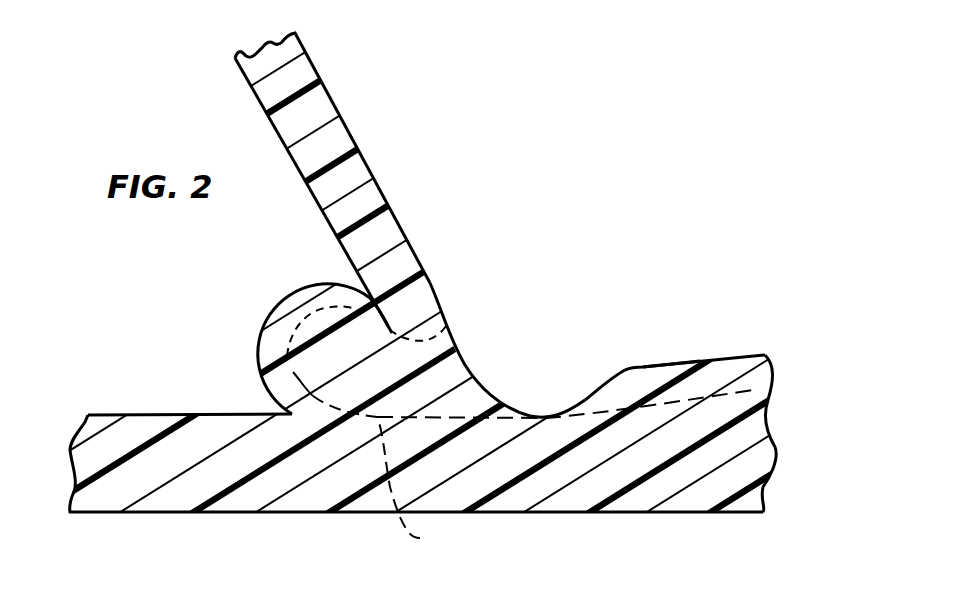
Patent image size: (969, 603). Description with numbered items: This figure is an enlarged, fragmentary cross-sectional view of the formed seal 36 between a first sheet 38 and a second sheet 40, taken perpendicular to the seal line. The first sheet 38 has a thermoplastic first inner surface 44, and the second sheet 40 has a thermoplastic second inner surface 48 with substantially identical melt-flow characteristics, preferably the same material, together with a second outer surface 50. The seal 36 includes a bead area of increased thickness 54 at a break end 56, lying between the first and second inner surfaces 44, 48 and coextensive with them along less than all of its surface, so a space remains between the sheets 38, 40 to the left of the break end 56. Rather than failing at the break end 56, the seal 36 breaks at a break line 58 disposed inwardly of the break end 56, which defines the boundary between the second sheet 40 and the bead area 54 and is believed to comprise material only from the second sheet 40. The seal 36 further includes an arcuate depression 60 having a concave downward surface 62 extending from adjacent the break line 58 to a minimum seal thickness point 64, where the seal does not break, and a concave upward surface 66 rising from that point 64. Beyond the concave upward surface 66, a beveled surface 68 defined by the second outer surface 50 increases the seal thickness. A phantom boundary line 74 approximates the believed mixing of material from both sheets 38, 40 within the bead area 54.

The seal 36 is at (533, 191).
The first sheet 38 is at (130, 483).
The second sheet 40 is at (300, 75).
The first inner surface 44 is at (156, 415).
The second inner surface 48 is at (262, 107).
The second outer surface 50 is at (738, 352).
The bead area of increased thickness 54 is at (272, 343).
The break end 56 is at (257, 367).
The break line 58 is at (446, 326).
The arcuate depression 60 is at (541, 379).
The concave downward surface 62 is at (465, 358).
The minimum seal thickness point 64 is at (542, 417).
The concave upward surface 66 is at (604, 384).
The beveled surface 68 is at (697, 362).
The phantom boundary line 74 is at (369, 460).